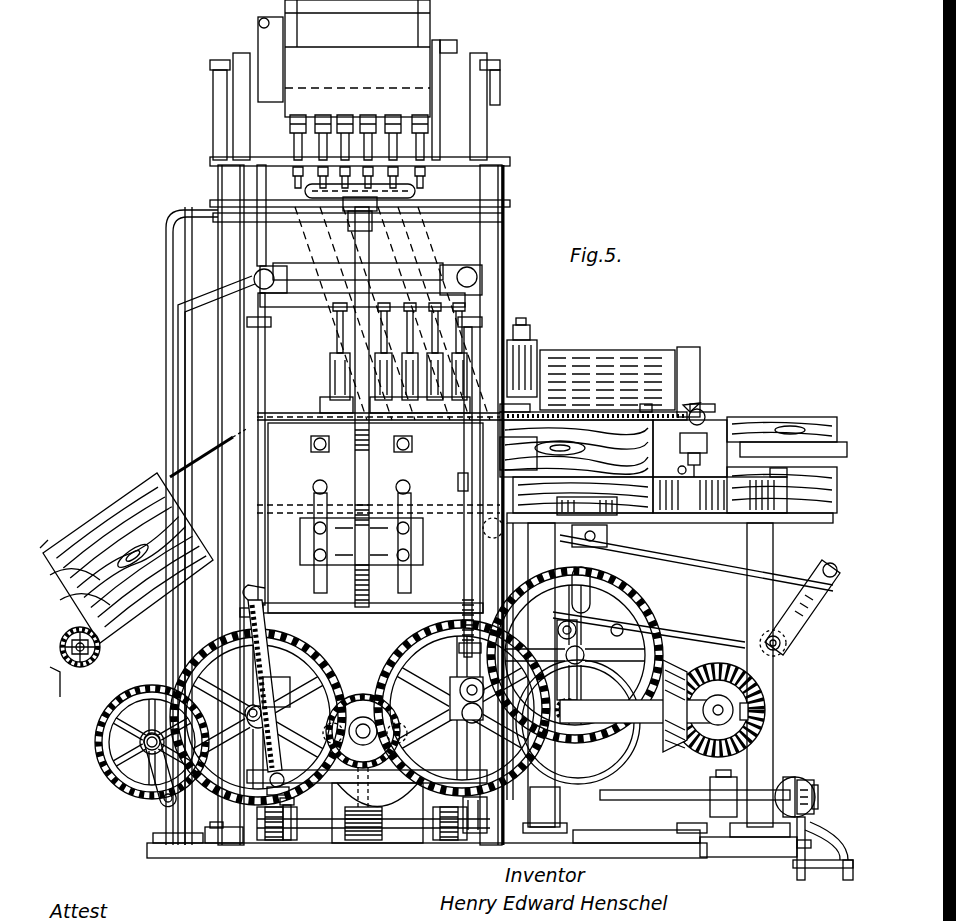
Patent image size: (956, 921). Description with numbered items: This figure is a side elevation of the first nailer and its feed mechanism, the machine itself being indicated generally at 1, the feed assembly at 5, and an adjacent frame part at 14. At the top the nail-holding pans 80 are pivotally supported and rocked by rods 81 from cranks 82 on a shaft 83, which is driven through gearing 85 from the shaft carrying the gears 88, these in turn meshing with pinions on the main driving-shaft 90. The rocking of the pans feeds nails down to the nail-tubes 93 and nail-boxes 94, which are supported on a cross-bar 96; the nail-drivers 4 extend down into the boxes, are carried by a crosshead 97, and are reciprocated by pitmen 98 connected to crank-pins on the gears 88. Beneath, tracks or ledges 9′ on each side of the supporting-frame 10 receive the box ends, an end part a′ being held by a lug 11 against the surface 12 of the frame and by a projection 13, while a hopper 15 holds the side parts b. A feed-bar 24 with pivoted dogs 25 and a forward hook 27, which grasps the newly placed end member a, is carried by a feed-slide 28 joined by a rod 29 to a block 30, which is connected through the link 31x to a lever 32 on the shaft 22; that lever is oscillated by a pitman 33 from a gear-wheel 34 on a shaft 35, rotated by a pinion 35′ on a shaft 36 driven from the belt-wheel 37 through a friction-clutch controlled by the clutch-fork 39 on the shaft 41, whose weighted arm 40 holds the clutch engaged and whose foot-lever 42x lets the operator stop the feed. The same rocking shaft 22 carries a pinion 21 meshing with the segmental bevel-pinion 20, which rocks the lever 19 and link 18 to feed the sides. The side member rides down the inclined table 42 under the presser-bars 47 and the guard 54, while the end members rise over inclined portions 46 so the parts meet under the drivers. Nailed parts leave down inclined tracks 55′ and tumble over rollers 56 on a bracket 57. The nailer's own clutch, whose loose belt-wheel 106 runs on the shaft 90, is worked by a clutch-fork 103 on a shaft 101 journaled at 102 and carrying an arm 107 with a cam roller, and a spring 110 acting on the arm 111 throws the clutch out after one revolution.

The machine frame 1 is at (472, 437).
The nail-holding pans 80 is at (357, 58).
The nail-tubes 93 is at (430, 262).
The rods 81 is at (177, 254).
The crosshead 97 is at (310, 278).
The nail-drivers 4 is at (343, 328).
The cross-bar 96 is at (305, 365).
The nail-boxes 94 is at (337, 373).
The pitmen 98 is at (257, 400).
The carriage plate 14 is at (483, 440).
The table 42 is at (340, 430).
The block 30 is at (463, 490).
The inclined portions 46 is at (497, 513).
The feed table assembly 5 is at (568, 349).
The hopper 15 is at (602, 352).
The presser-bars 47 is at (597, 410).
The guard 54 is at (525, 417).
The side part of the box b is at (100, 516).
The rod 29 is at (580, 480).
The end part a′ is at (331, 531).
The projection 13 is at (518, 453).
The feed-bar 24 is at (713, 437).
The dogs 25 is at (685, 408).
The end member a is at (767, 430).
The hook 27 is at (812, 453).
The surface of the frame 12 is at (720, 495).
The lug 11 is at (603, 507).
The tracks or ledges 9′ is at (677, 517).
The feed-slide 28 is at (733, 497).
The supporting-frame 10 is at (538, 567).
The link 31x is at (700, 560).
The pitman 33 is at (710, 625).
The link 18 is at (597, 547).
The lever 19 is at (590, 587).
The gear-wheel 34 is at (607, 607).
The shaft 35 is at (573, 633).
The pinion 35′ is at (630, 757).
The belt-wheel 37 is at (623, 750).
The shaft 36 is at (560, 712).
The lever 32 is at (800, 607).
The pinion 21 is at (740, 670).
The shaft 22 is at (735, 708).
The segmental bevel-pinion 20 is at (667, 675).
The shaft 41 is at (648, 832).
The weighted arm 40 is at (727, 813).
The foot-lever 42x is at (827, 853).
The inclined tracks 55′ is at (193, 460).
The rollers 56 is at (103, 653).
The bracket 57 is at (60, 692).
The gearing 85 is at (115, 800).
The cranks 82 is at (160, 773).
The shaft 83 is at (147, 747).
The gears 88 is at (213, 648).
The spring 110 is at (273, 678).
The belt-wheel 106 is at (357, 668).
The clutch-fork 39 is at (362, 715).
The main driving-shaft 90 is at (383, 723).
The shaft 101 is at (343, 833).
The clutch-fork 103 is at (380, 833).
The framework bearing 102 is at (263, 833).
The arm 111 is at (277, 827).
The arm 107 is at (447, 820).